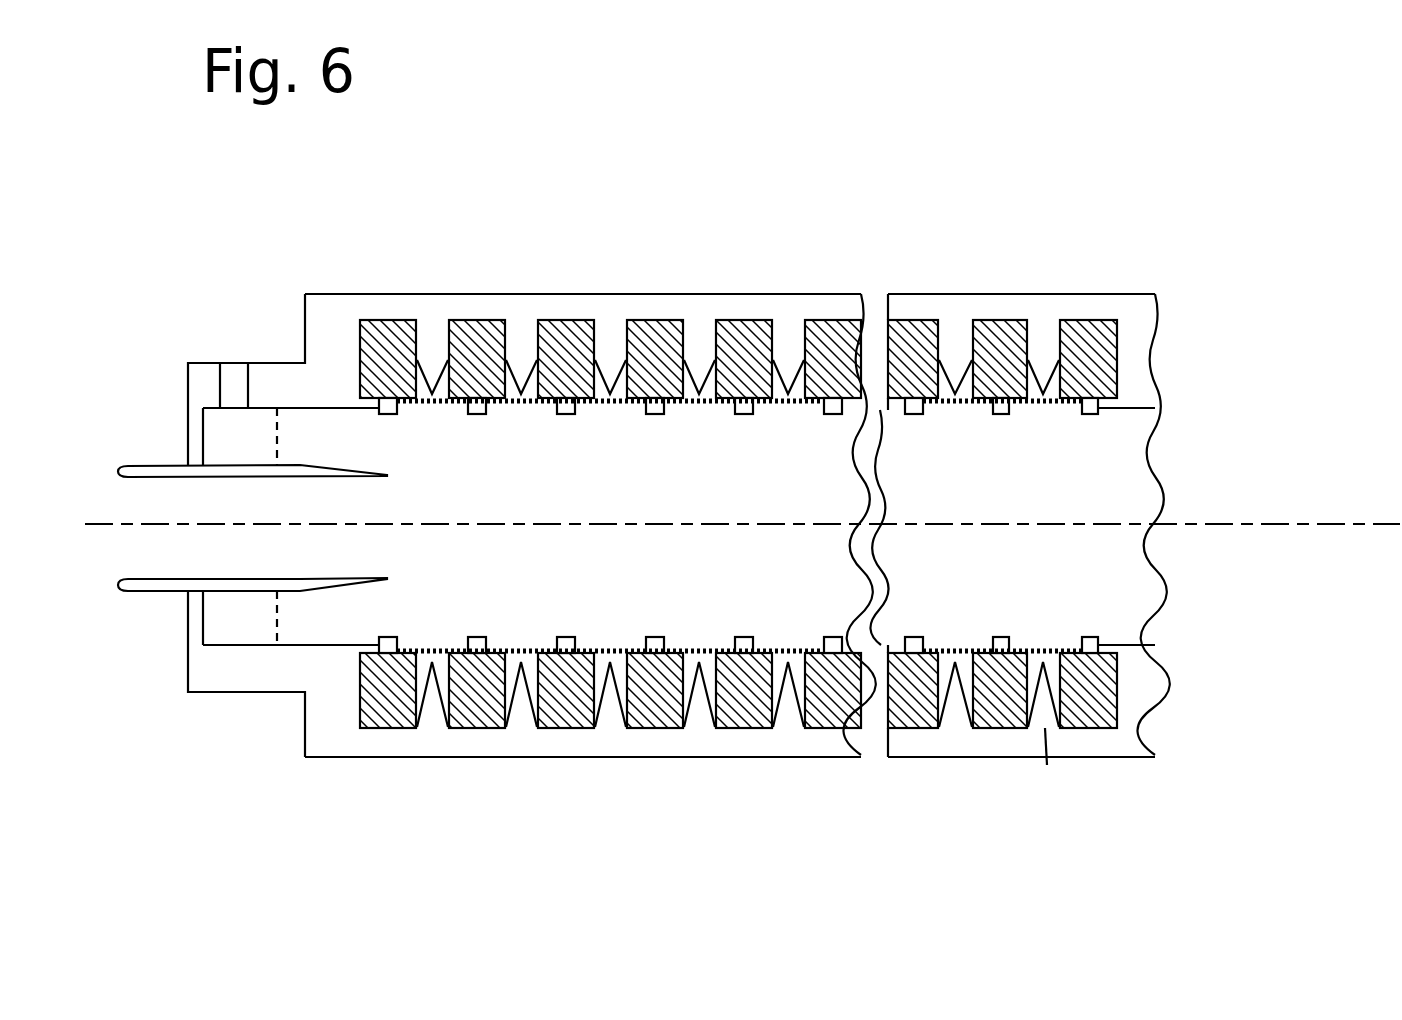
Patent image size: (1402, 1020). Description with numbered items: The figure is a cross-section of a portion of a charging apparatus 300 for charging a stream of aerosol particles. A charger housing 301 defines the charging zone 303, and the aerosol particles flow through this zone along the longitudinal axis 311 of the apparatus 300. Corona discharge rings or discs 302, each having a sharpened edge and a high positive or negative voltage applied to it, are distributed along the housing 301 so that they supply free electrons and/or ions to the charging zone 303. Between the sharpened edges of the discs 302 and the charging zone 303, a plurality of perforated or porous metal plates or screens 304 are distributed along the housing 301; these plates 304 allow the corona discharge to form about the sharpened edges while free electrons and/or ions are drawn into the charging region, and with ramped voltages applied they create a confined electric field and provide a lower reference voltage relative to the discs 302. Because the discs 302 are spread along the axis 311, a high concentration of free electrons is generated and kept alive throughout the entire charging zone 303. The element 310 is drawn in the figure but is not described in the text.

The charging apparatus 300 is at (1092, 228).
The charger housing 301 is at (630, 295).
The corona discharge rings or discs 302 is at (627, 357).
The charging zone 303 is at (730, 477).
The perforated or porous metal plates or screens 304 is at (620, 405).
The blade plate 310 is at (147, 556).
The longitudinal axis 311 is at (1240, 524).